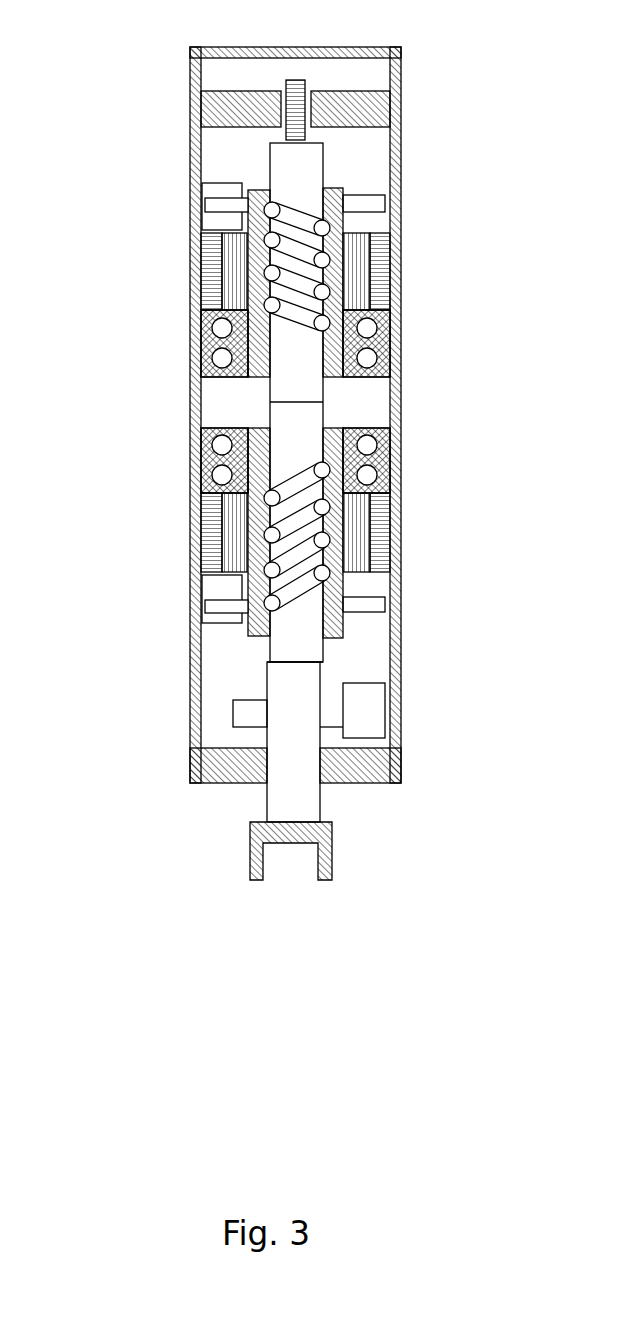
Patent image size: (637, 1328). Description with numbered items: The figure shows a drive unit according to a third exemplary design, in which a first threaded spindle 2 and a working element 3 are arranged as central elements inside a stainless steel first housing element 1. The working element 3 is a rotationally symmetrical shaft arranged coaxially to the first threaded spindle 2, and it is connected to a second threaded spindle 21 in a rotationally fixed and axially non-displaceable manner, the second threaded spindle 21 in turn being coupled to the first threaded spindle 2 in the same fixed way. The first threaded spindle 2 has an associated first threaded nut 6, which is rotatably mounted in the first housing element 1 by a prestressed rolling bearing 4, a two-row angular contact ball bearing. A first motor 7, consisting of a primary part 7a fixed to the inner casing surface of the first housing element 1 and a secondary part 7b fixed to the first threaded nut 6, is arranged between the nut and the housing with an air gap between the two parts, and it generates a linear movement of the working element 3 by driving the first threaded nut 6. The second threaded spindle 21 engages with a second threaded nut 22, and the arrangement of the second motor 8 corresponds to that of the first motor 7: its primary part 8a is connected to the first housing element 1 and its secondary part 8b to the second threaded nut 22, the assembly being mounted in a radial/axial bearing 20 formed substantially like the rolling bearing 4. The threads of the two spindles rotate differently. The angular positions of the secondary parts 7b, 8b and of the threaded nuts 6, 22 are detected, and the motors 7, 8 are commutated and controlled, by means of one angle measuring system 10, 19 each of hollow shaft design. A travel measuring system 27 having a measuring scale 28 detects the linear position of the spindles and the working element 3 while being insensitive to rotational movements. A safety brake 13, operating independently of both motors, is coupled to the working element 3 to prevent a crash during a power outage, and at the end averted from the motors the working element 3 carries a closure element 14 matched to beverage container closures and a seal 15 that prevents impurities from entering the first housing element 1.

The first housing element 1 is at (197, 112).
The first threaded spindle 2 is at (288, 160).
The working element 3 is at (288, 706).
The rolling bearing 4 is at (220, 356).
The first threaded nut 6 is at (252, 224).
The first motor 7 is at (213, 264).
The primary part 7a is at (212, 299).
The secondary part 7b is at (235, 263).
The second motor 8 is at (215, 522).
The primary part 8a is at (206, 553).
The secondary part 8b is at (233, 513).
The angle measuring system 10 is at (228, 193).
The safety brake 13 is at (362, 705).
The closure element 14 is at (287, 863).
The seal 15 is at (262, 765).
The angle measuring system 19 is at (217, 603).
The radial/axial bearing 20 is at (217, 450).
The second threaded spindle 21 is at (308, 652).
The second threaded nut 22 is at (258, 485).
The travel measuring system 27 is at (250, 92).
The measuring scale 28 is at (285, 112).